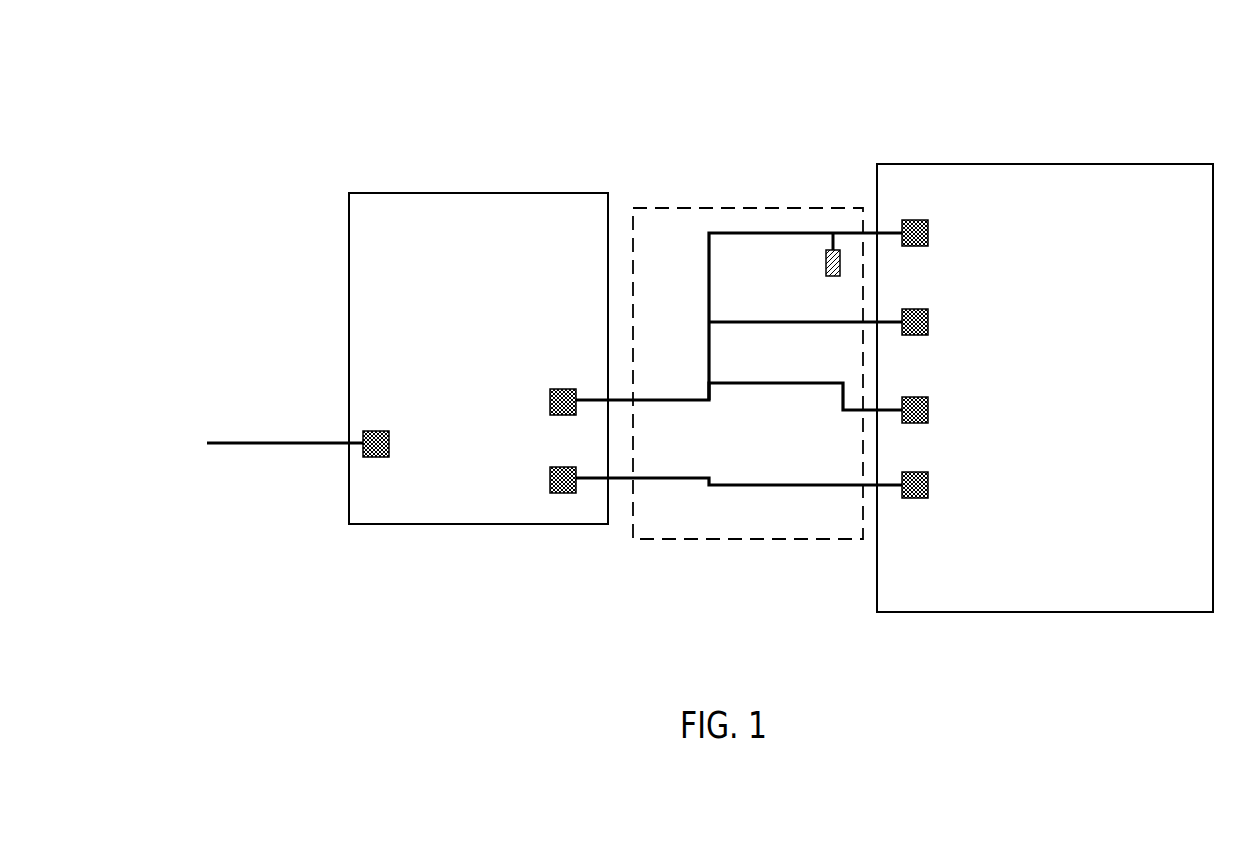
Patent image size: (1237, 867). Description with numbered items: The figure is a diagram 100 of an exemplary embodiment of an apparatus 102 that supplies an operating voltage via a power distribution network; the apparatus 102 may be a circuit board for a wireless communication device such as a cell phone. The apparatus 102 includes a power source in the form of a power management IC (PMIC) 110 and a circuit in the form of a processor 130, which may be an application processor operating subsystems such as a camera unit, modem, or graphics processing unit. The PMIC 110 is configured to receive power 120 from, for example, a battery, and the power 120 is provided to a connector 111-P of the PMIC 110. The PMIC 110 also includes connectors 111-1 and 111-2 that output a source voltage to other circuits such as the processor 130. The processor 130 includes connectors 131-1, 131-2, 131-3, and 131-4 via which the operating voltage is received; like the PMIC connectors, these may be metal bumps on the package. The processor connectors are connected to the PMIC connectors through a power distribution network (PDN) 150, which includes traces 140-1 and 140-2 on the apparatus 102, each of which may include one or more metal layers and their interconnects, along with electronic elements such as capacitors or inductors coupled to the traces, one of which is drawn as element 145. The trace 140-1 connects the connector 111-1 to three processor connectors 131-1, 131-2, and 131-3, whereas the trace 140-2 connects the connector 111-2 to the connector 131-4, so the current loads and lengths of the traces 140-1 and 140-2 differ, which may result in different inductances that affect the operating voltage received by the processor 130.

The diagram 100 is at (238, 49).
The apparatus 102 is at (394, 107).
The power management IC 110 is at (560, 193).
The connector 111-P is at (389, 433).
The connector 111-1 is at (550, 397).
The connector 111-2 is at (550, 474).
The power 120 is at (283, 423).
The processor 130 is at (1170, 164).
The connector 131-1 is at (928, 226).
The connector 131-2 is at (928, 315).
The connector 131-3 is at (928, 403).
The connector 131-4 is at (928, 478).
The trace 140-1 is at (797, 383).
The trace 140-2 is at (797, 484).
The passive component 145 is at (826, 264).
The power distribution network 150 is at (808, 540).